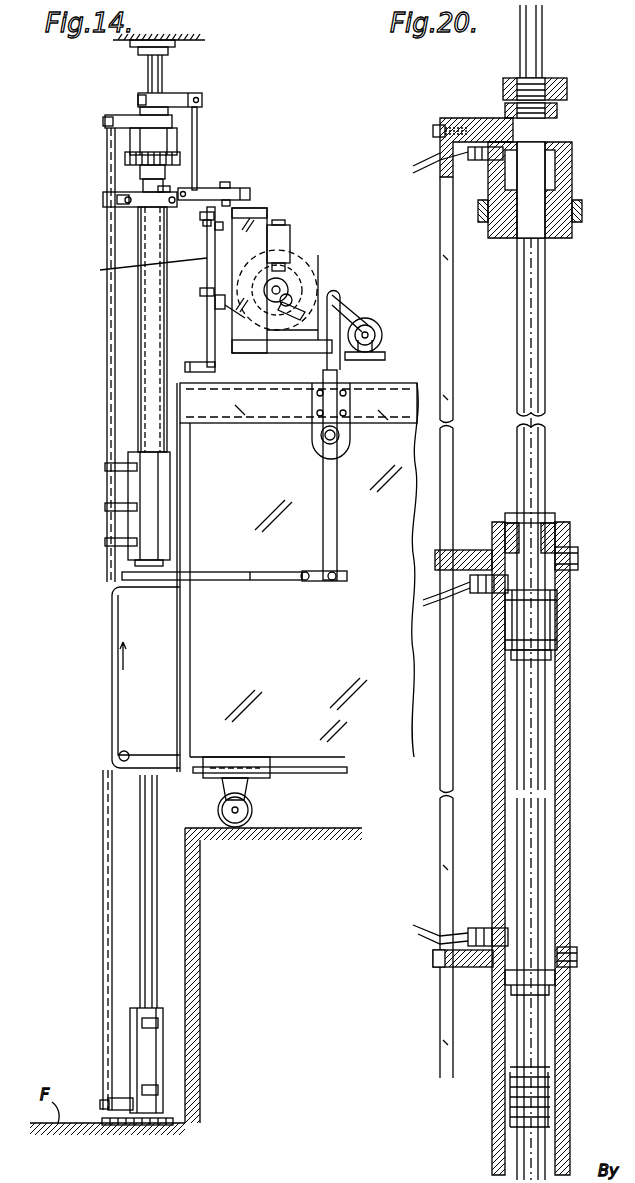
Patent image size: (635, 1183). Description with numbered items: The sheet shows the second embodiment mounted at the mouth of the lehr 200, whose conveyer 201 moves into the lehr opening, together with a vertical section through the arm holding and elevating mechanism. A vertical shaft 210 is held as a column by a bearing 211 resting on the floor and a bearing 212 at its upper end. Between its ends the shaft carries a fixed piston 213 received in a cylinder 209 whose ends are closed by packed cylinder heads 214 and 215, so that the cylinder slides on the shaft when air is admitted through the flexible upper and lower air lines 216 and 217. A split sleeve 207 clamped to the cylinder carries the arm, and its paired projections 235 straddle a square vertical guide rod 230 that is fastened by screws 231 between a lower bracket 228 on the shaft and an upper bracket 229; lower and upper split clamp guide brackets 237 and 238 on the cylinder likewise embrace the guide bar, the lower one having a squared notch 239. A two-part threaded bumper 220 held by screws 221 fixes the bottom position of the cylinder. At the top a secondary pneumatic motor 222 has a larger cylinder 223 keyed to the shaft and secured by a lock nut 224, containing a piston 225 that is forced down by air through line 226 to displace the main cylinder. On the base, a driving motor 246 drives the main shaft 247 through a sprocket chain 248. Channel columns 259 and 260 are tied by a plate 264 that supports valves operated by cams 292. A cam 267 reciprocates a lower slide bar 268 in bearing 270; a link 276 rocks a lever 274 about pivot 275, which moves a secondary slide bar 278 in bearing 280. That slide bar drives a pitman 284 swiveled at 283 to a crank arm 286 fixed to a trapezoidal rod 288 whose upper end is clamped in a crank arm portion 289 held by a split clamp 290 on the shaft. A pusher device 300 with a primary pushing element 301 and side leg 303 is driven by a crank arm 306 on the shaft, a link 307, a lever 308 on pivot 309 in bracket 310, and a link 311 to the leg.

In FIG. 14, the lehr 200 is at (362, 686).
In FIG. 14, the conveyer 201 is at (112, 690).
In FIG. 14, the split sleeve 207 is at (160, 500).
In FIG. 14, the cylinder 209 is at (140, 383).
In FIG. 20, the cylinder 209 is at (492, 795).
In FIG. 14, the vertical shaft 210 is at (162, 72).
In FIG. 20, the vertical shaft 210 is at (536, 410).
In FIG. 14, the bearing 211 is at (172, 1118).
In FIG. 14, the bearing 212 is at (178, 50).
In FIG. 20, the fixed piston 213 is at (535, 628).
In FIG. 14, the cylinder head 214 is at (120, 207).
In FIG. 20, the cylinder head 214 is at (570, 540).
In FIG. 20, the cylinder head 215 is at (570, 977).
In FIG. 20, the upper air line 216 is at (450, 596).
In FIG. 20, the lower air line 217 is at (452, 940).
In FIG. 14, the bumper 220 is at (163, 1055).
In FIG. 20, the bumper 220 is at (560, 1036).
In FIG. 14, the screws 221 is at (158, 1025).
In FIG. 14, the secondary pneumatic motor 222 is at (124, 147).
In FIG. 20, the secondary pneumatic motor 222 is at (586, 223).
In FIG. 14, the cylinder 223 is at (127, 150).
In FIG. 20, the cylinder 223 is at (570, 168).
In FIG. 14, the lock nut 224 is at (168, 111).
In FIG. 20, the lock nut 224 is at (553, 112).
In FIG. 20, the piston 225 is at (565, 193).
In FIG. 20, the line 226 is at (438, 155).
In FIG. 14, the lower bracket 228 is at (118, 1098).
In FIG. 14, the upper bracket 229 is at (127, 115).
In FIG. 20, the upper bracket 229 is at (486, 118).
In FIG. 14, the vertical guide rod 230 is at (107, 423).
In FIG. 20, the vertical guide rod 230 is at (455, 412).
In FIG. 14, the screws 231 is at (103, 122).
In FIG. 20, the screws 231 is at (433, 129).
In FIG. 14, the projections 235 is at (108, 468).
In FIG. 20, the lower split clamp guide bracket 237 is at (578, 955).
In FIG. 14, the upper split clamp guide bracket 238 is at (166, 186).
In FIG. 20, the upper split clamp guide bracket 238 is at (580, 563).
In FIG. 20, the squared notch 239 is at (438, 965).
In FIG. 14, the driving motor 246 is at (380, 330).
In FIG. 14, the main shaft 247 is at (284, 283).
In FIG. 14, the sprocket chain 248 is at (360, 325).
In FIG. 14, the column 259 is at (225, 262).
In FIG. 14, the column 260 is at (268, 212).
In FIG. 14, the plate 264 is at (290, 235).
In FIG. 14, the cam 267 is at (291, 296).
In FIG. 14, the lower slide bar 268 is at (238, 312).
In FIG. 14, the bearing 270 is at (225, 305).
In FIG. 14, the lever 274 is at (136, 269).
In FIG. 14, the pivot 275 is at (185, 366).
In FIG. 14, the link 276 is at (218, 298).
In FIG. 14, the secondary slide bar 278 is at (220, 230).
In FIG. 14, the bearing 280 is at (219, 238).
In FIG. 14, the swivel 283 is at (226, 182).
In FIG. 14, the pitman 284 is at (250, 212).
In FIG. 14, the crank arm 286 is at (250, 190).
In FIG. 14, the trapezoidal rod 288 is at (193, 140).
In FIG. 14, the crank arm portion 289 is at (180, 93).
In FIG. 14, the split clamp 290 is at (143, 94).
In FIG. 14, the cams 292 is at (295, 308).
In FIG. 14, the pusher device 300 is at (206, 566).
In FIG. 14, the primary pushing element 301 is at (120, 576).
In FIG. 14, the side leg 303 is at (248, 584).
In FIG. 14, the crank arm 306 is at (318, 300).
In FIG. 14, the link 307 is at (318, 306).
In FIG. 14, the lever 308 is at (337, 505).
In FIG. 14, the pivot 309 is at (340, 438).
In FIG. 14, the bracket 310 is at (315, 448).
In FIG. 14, the link 311 is at (306, 584).